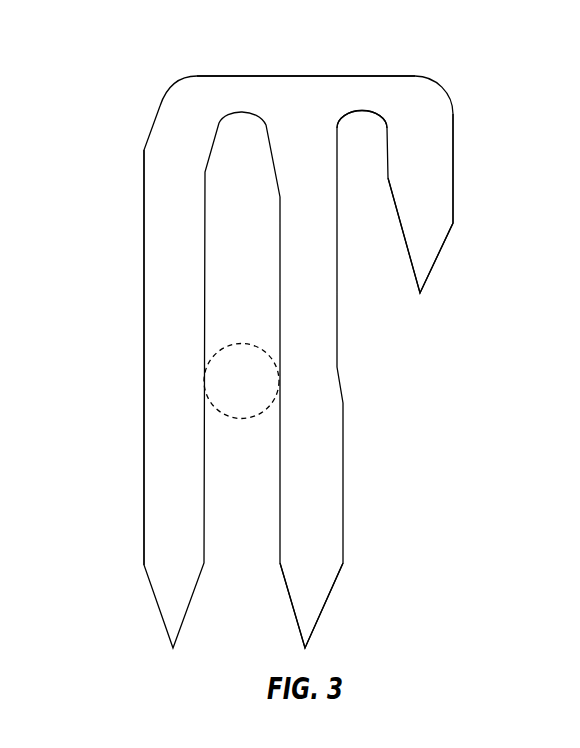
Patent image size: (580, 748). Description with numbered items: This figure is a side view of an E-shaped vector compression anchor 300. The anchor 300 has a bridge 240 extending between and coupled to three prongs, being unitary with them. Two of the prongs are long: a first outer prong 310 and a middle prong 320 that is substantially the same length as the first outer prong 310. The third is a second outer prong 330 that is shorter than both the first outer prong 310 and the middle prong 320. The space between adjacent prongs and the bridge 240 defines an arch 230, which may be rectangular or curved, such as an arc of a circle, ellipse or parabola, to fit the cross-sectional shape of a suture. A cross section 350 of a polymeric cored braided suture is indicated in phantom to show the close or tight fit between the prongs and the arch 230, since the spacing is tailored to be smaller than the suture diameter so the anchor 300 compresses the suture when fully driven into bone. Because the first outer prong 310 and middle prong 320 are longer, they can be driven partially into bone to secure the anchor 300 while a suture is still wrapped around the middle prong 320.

The vector compression anchor 300 is at (432, 60).
The bridge 240 is at (358, 75).
The arch 230 is at (338, 128).
The second outer prong 330 is at (453, 208).
The first outer prong 310 is at (143, 310).
The middle prong 320 is at (280, 563).
The cross section of polymeric cored braided suture 350 is at (263, 394).